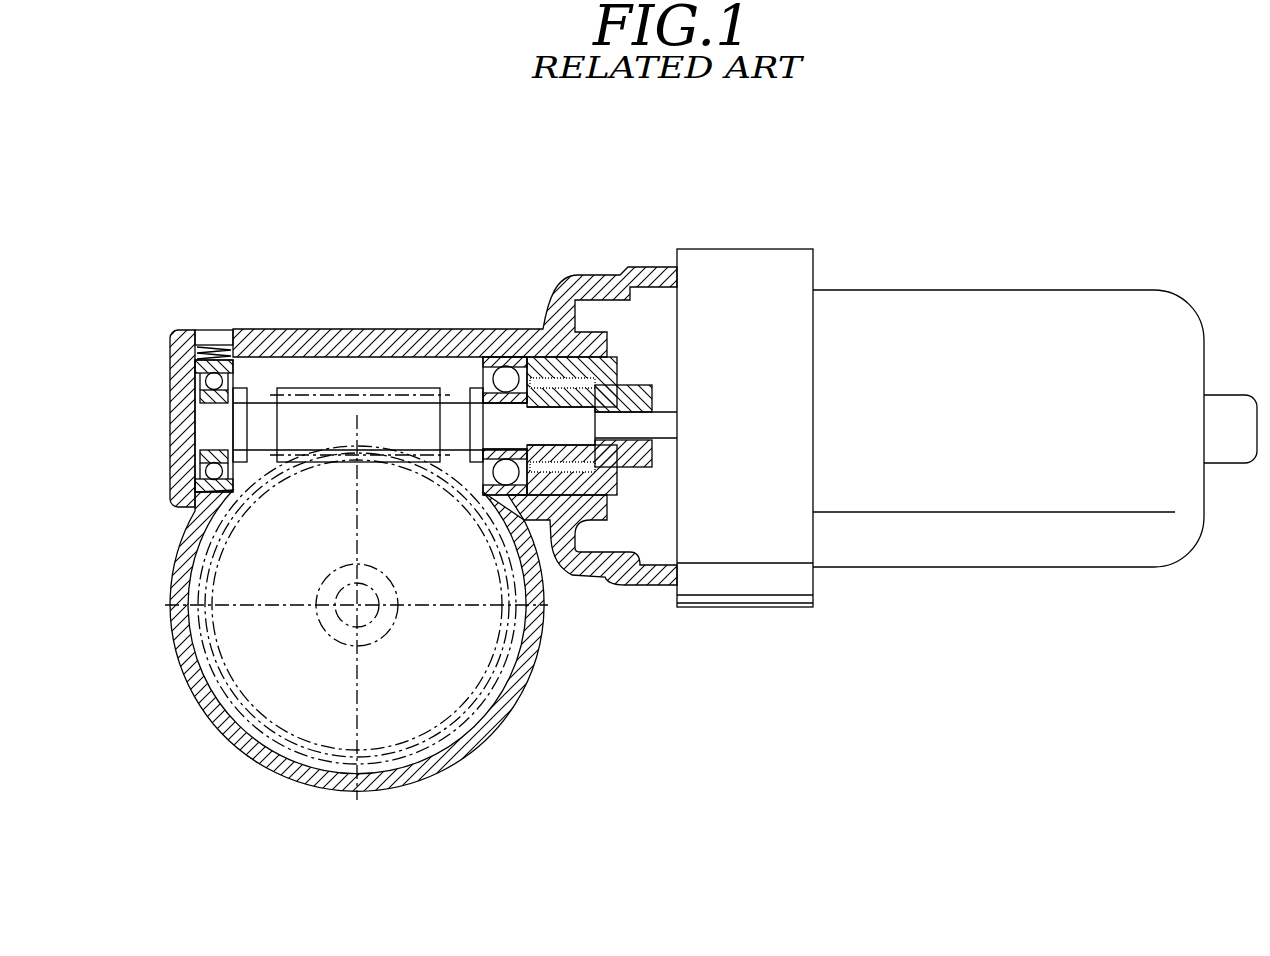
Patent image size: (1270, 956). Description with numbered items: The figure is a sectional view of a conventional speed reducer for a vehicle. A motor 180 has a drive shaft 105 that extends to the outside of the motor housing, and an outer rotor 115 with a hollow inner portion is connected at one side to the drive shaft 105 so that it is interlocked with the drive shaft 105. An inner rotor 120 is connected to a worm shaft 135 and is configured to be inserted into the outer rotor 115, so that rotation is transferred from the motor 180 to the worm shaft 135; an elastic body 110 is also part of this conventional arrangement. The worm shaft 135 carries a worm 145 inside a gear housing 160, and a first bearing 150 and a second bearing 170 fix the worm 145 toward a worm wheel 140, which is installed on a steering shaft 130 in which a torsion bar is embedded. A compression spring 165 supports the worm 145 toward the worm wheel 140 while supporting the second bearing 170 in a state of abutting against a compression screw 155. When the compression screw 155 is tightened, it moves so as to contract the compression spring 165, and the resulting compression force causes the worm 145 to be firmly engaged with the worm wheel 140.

The drive shaft 105 is at (660, 420).
The elastic body 110 is at (584, 372).
The outer rotor 115 is at (570, 365).
The inner rotor 120 is at (570, 472).
The steering shaft 130 is at (334, 602).
The worm shaft 135 is at (262, 402).
The worm wheel 140 is at (493, 692).
The worm 145 is at (360, 388).
The first bearing 150 is at (512, 370).
The compression screw 155 is at (218, 328).
The gear housing 160 is at (413, 330).
The compression spring 165 is at (185, 350).
The second bearing 170 is at (185, 452).
The motor 180 is at (900, 302).